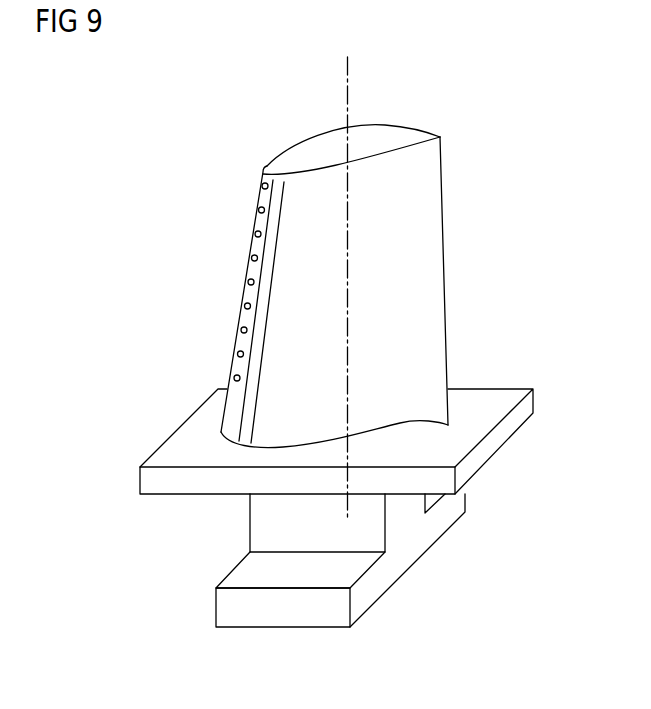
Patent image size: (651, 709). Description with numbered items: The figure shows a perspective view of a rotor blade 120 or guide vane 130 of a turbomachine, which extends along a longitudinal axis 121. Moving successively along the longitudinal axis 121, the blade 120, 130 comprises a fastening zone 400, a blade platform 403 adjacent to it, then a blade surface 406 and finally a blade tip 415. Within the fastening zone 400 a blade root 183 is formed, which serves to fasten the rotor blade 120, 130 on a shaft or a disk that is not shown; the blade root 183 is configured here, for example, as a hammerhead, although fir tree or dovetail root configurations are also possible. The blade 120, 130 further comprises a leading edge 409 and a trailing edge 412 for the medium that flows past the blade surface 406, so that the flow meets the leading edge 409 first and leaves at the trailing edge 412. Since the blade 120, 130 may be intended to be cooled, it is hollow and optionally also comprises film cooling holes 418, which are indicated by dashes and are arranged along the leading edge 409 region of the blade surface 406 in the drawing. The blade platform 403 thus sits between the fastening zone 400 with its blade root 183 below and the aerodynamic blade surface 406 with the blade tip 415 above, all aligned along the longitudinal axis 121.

The rotor blade 120 is at (292, 255).
The guide vane 130 is at (330, 255).
The longitudinal axis 121 is at (347, 85).
The blade root 183 is at (243, 577).
The fastening zone 400 is at (332, 560).
The blade platform 403 is at (507, 432).
The blade surface 406 is at (237, 415).
The leading edge 409 is at (250, 249).
The trailing edge 412 is at (330, 255).
The blade tip 415 is at (290, 160).
The film cooling holes 418 is at (262, 188).